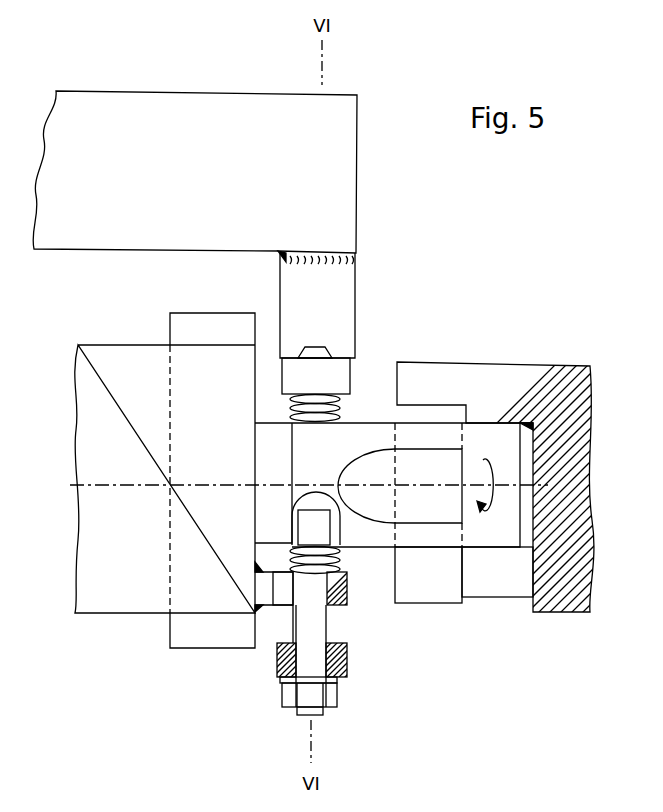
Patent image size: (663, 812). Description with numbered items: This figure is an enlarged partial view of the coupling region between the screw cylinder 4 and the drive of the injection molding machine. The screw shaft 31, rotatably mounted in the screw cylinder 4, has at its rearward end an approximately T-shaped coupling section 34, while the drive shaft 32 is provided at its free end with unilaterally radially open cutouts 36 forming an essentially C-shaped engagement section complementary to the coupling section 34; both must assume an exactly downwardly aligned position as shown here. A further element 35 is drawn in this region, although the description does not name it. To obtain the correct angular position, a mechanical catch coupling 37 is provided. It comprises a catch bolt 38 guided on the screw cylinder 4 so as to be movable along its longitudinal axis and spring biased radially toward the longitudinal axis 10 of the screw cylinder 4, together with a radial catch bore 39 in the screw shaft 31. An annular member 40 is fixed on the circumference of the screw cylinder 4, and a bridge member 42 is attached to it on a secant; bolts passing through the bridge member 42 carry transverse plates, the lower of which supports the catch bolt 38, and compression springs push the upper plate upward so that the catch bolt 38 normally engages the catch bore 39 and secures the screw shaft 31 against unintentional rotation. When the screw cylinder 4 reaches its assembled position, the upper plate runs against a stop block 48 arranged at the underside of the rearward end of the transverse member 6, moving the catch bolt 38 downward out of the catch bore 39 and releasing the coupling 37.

The screw cylinder 4 is at (128, 360).
The transverse member 6 is at (345, 131).
The longitudinal axis 10 is at (120, 478).
The screw shaft 31 is at (367, 430).
The drive shaft 32 is at (534, 388).
The T-shaped coupling section 34 is at (490, 437).
The pin 35 is at (417, 500).
The cutouts 36 is at (452, 567).
The mechanical catch coupling 37 is at (320, 527).
The catch bolt 38 is at (317, 618).
The catch bore 39 is at (303, 523).
The annular member 40 is at (178, 632).
The bridge member 42 is at (270, 590).
The stop block 48 is at (333, 302).